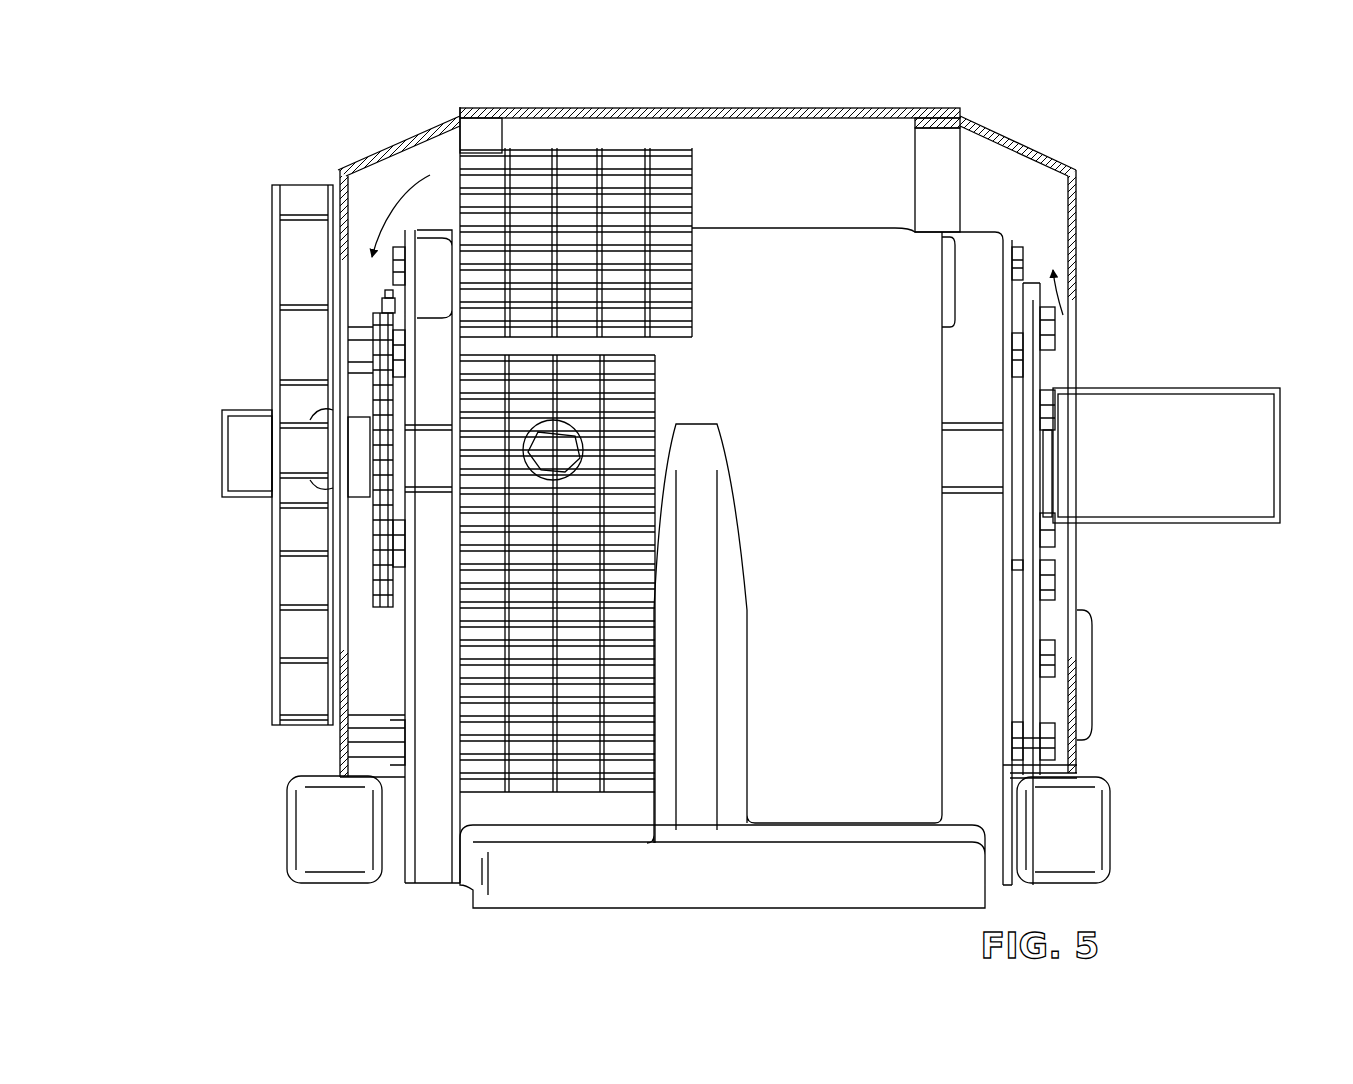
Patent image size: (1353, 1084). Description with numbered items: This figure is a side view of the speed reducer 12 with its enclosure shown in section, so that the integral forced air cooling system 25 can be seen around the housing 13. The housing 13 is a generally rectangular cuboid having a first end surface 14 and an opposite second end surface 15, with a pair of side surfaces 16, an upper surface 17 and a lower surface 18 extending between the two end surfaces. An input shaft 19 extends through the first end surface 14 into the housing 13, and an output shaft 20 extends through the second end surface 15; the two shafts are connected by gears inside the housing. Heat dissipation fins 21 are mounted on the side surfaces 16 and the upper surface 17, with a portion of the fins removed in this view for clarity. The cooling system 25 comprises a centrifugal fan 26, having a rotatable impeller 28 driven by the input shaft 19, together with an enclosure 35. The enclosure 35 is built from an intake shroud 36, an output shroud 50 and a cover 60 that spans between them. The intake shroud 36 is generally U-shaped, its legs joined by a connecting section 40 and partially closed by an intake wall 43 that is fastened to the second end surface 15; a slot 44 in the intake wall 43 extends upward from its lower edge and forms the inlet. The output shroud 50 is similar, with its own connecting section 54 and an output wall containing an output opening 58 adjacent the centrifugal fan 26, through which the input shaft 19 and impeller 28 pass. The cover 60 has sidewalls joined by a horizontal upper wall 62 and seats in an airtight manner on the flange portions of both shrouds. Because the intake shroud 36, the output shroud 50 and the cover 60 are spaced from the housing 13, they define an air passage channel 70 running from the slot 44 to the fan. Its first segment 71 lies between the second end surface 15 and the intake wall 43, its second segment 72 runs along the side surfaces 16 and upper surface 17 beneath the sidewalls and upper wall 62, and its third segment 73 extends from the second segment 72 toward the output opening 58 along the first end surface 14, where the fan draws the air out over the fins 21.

The speed reducer 12 is at (807, 464).
The housing 13 is at (905, 257).
The first end surface 14 is at (410, 800).
The second end surface 15 is at (1003, 738).
The side surfaces 16 is at (920, 655).
The upper surface 17 is at (780, 228).
The lower surface 18 is at (662, 871).
The input shaft 19 is at (225, 460).
The output shaft 20 is at (1233, 410).
The heat dissipation fins 21 is at (622, 150).
The forced air cooling system 25 is at (165, 272).
The centrifugal fan 26 is at (256, 419).
The impeller 28 is at (298, 612).
The enclosure 35 is at (385, 408).
The intake shroud 36 is at (1078, 288).
The connecting section 40 is at (965, 130).
The intake wall 43 is at (1082, 474).
The slot 44 is at (1078, 562).
The output shroud 50 is at (437, 127).
The connecting section 54 is at (387, 148).
The output opening 58 is at (350, 680).
The cover 60 is at (710, 98).
The upper wall 62 is at (900, 115).
The air passage channel 70 is at (710, 130).
The first segment 71 is at (1063, 322).
The second segment 72 is at (825, 203).
The third segment 73 is at (388, 205).